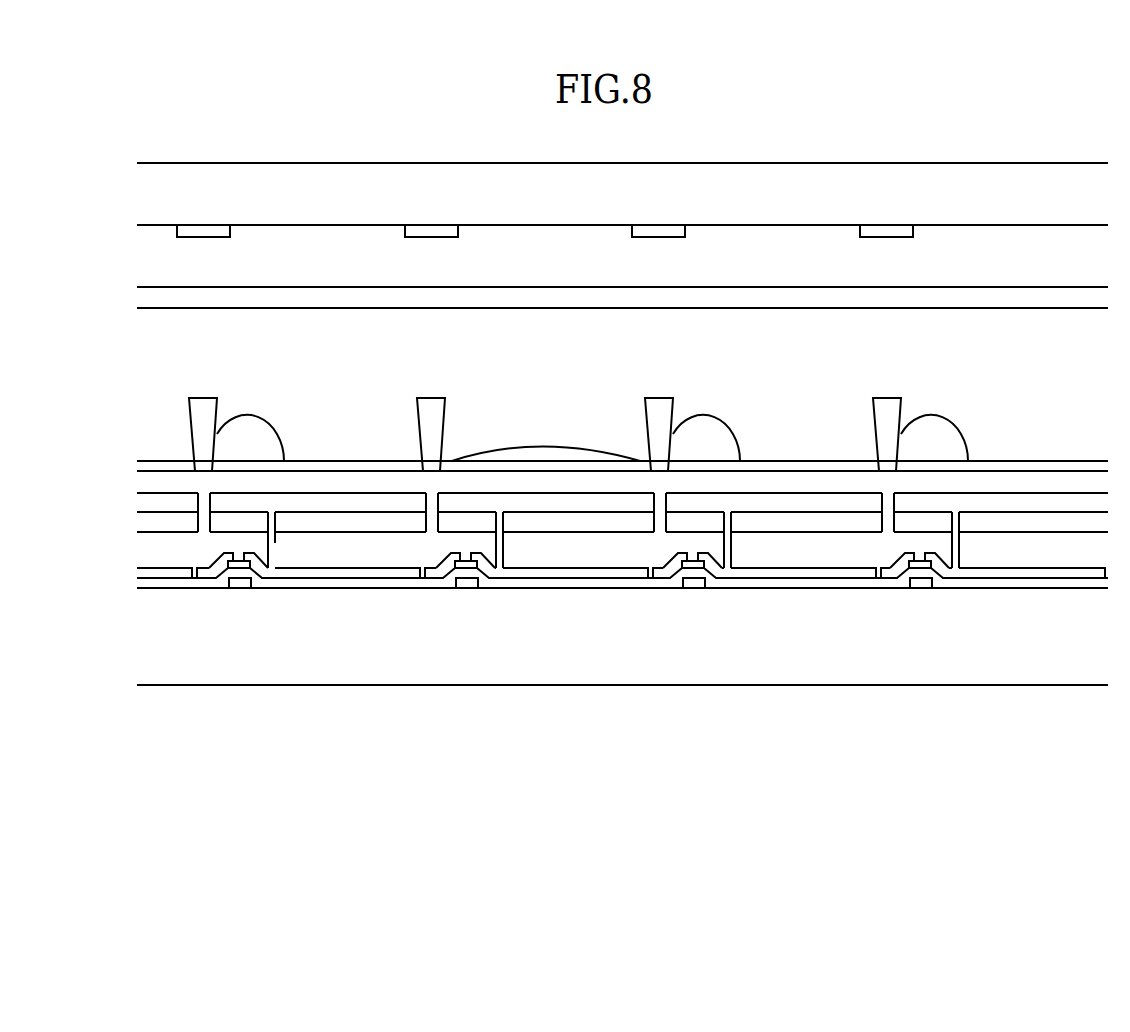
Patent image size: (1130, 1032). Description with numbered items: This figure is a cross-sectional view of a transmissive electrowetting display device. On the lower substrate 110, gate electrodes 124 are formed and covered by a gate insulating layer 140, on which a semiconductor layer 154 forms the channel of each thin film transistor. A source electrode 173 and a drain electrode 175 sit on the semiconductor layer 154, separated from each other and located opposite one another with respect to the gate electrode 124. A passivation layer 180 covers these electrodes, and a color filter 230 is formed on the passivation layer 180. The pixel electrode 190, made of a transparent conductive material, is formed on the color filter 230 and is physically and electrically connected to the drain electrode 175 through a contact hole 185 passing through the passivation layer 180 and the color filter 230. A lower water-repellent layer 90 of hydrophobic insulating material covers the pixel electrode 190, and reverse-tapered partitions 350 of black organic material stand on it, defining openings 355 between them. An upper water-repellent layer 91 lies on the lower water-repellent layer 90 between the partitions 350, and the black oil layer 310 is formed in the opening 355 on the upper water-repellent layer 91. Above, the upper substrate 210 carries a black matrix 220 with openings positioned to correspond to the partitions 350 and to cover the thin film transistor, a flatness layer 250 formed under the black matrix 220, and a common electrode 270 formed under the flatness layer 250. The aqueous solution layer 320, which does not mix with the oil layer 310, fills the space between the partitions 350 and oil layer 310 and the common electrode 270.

The lower water-repellent layer 90 is at (160, 483).
The upper water-repellent layer 91 is at (160, 463).
The lower substrate 110 is at (520, 650).
The gate electrode 124 is at (243, 582).
The gate insulating layer 140 is at (411, 578).
The semiconductor layer 154 is at (224, 570).
The source electrode 173 is at (207, 572).
The drain electrode 175 is at (374, 570).
The passivation layer 180 is at (588, 548).
The contact hole 185 is at (275, 543).
The pixel electrode 190 is at (783, 505).
The upper substrate 210 is at (701, 190).
The black matrix 220 is at (888, 238).
The color filter 230 is at (842, 523).
The flatness layer 250 is at (757, 250).
The common electrode 270 is at (836, 303).
The oil layer 310 is at (511, 458).
The aqueous solution layer 320 is at (162, 352).
The partition 350 is at (198, 412).
The opening 355 is at (218, 407).